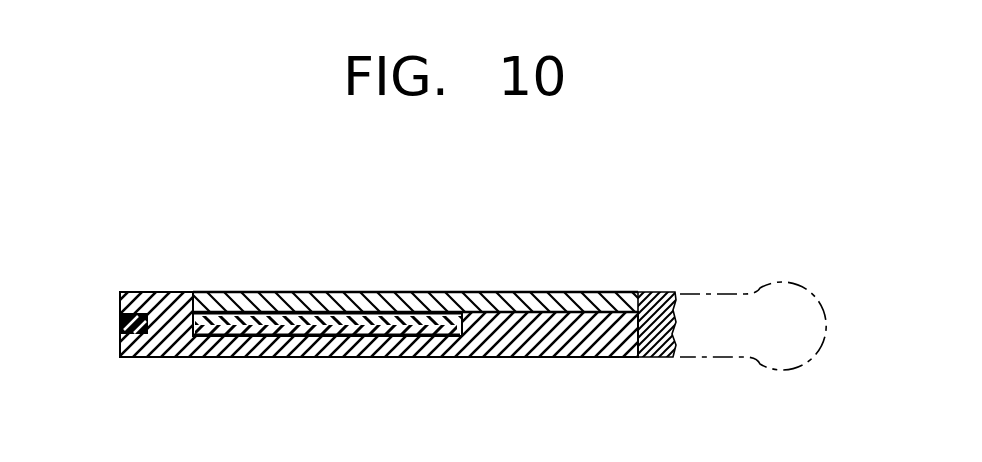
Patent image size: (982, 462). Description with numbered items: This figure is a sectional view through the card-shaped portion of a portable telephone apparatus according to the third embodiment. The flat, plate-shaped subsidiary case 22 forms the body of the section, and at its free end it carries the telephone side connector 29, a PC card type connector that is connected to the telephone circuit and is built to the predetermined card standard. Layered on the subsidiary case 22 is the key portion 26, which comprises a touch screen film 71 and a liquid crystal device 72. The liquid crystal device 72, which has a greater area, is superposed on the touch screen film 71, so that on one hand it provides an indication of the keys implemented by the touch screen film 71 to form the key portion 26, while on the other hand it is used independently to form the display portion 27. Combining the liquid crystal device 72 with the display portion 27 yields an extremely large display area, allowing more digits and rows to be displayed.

The subsidiary case 22 is at (636, 357).
The key portion 26 is at (333, 293).
The display portion 27 is at (573, 293).
The telephone side connector 29 is at (120, 328).
The touch screen film 71 is at (362, 323).
The liquid crystal device 72 is at (454, 293).